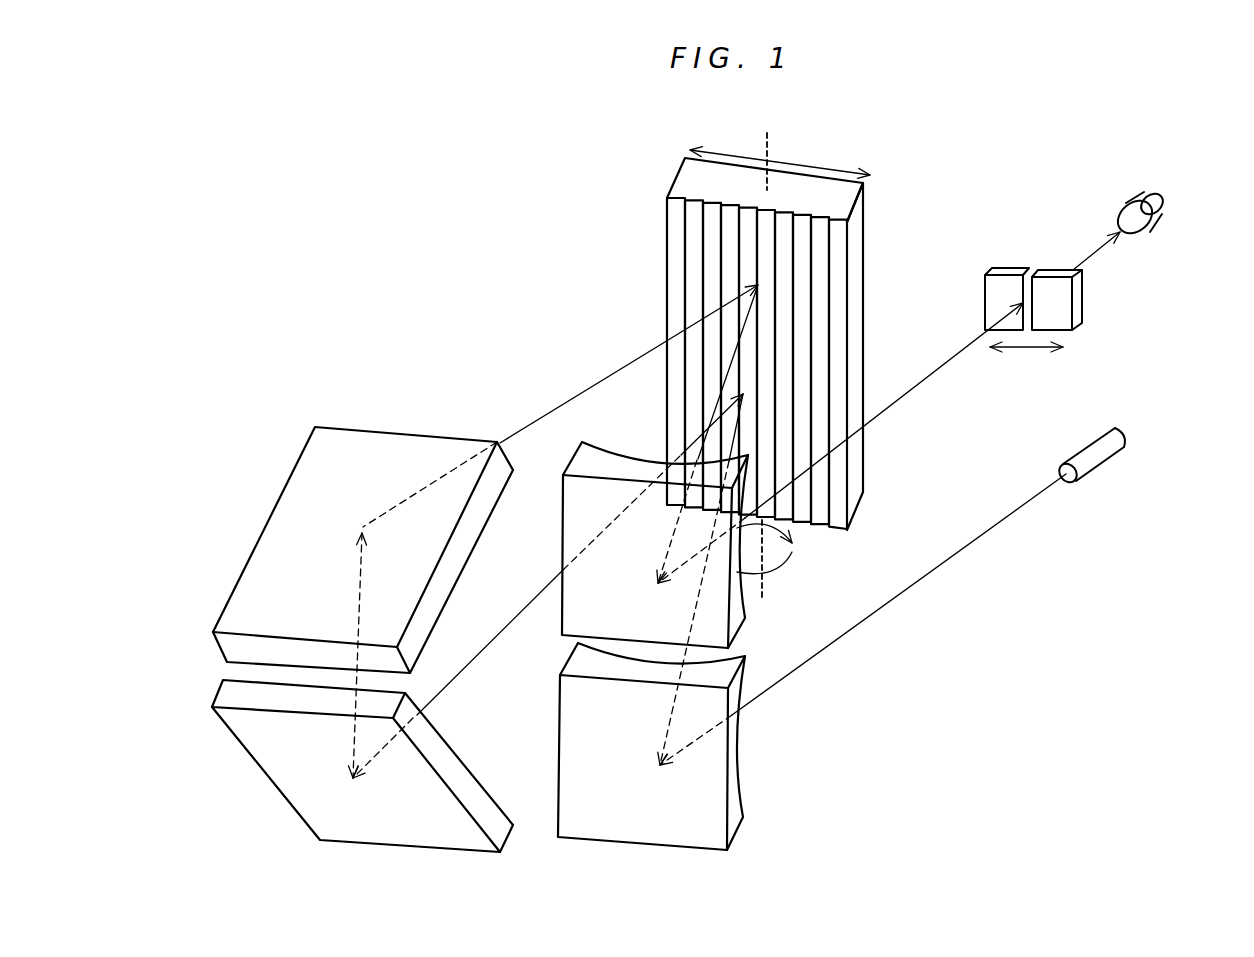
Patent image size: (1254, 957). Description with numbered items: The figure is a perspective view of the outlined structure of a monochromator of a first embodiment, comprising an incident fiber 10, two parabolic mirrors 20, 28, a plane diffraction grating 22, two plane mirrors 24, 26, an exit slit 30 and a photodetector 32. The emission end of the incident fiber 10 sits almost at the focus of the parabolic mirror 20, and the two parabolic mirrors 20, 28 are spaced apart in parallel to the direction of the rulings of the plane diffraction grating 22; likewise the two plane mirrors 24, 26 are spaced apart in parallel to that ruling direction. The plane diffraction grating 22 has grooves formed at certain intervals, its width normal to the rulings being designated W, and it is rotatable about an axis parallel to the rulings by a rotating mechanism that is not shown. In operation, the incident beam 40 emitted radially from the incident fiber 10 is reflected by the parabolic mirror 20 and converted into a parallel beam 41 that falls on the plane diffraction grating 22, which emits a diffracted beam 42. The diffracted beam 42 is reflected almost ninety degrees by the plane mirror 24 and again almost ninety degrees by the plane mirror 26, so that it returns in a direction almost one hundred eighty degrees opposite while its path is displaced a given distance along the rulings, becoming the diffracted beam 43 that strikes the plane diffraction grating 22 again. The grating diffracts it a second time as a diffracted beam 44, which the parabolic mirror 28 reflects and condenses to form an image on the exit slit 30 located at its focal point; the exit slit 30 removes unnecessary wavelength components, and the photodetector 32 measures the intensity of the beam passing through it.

The incident fiber 10 is at (1118, 453).
The parabolic mirror 20 is at (733, 795).
The plane diffraction grating 22 is at (860, 228).
The plane mirror 24 is at (440, 752).
The plane mirror 26 is at (430, 445).
The parabolic mirror 28 is at (575, 513).
The exit slit 30 is at (1077, 300).
The photodetector 32 is at (1160, 213).
The incident beam 40 is at (940, 568).
The parallel beam 41 is at (747, 617).
The diffracted beam 42 is at (502, 631).
The diffracted beam 43 is at (610, 373).
The diffracted beam 44 is at (707, 380).